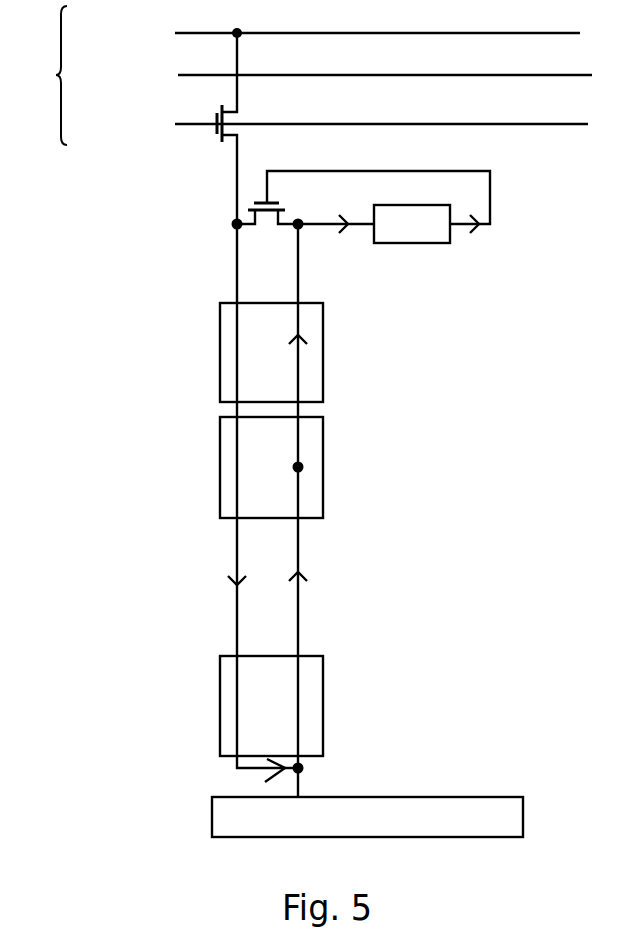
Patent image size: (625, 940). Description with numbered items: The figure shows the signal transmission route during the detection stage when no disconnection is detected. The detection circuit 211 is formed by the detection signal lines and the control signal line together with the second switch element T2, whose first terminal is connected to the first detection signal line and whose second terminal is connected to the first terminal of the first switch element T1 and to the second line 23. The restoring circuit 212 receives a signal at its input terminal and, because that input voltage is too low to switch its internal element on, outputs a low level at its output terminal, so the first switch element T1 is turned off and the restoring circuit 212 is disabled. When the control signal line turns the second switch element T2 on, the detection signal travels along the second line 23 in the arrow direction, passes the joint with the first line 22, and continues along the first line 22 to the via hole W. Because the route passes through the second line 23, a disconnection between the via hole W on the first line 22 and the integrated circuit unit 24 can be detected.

The detection circuit 211 is at (305, 75).
The second switch element T2 is at (247, 128).
The first switch element T1 is at (361, 202).
The restoring circuit 212 is at (390, 233).
The second line 23 is at (266, 503).
The first line 22 is at (307, 510).
The via hole W is at (283, 468).
The integrated circuit unit 24 is at (367, 817).